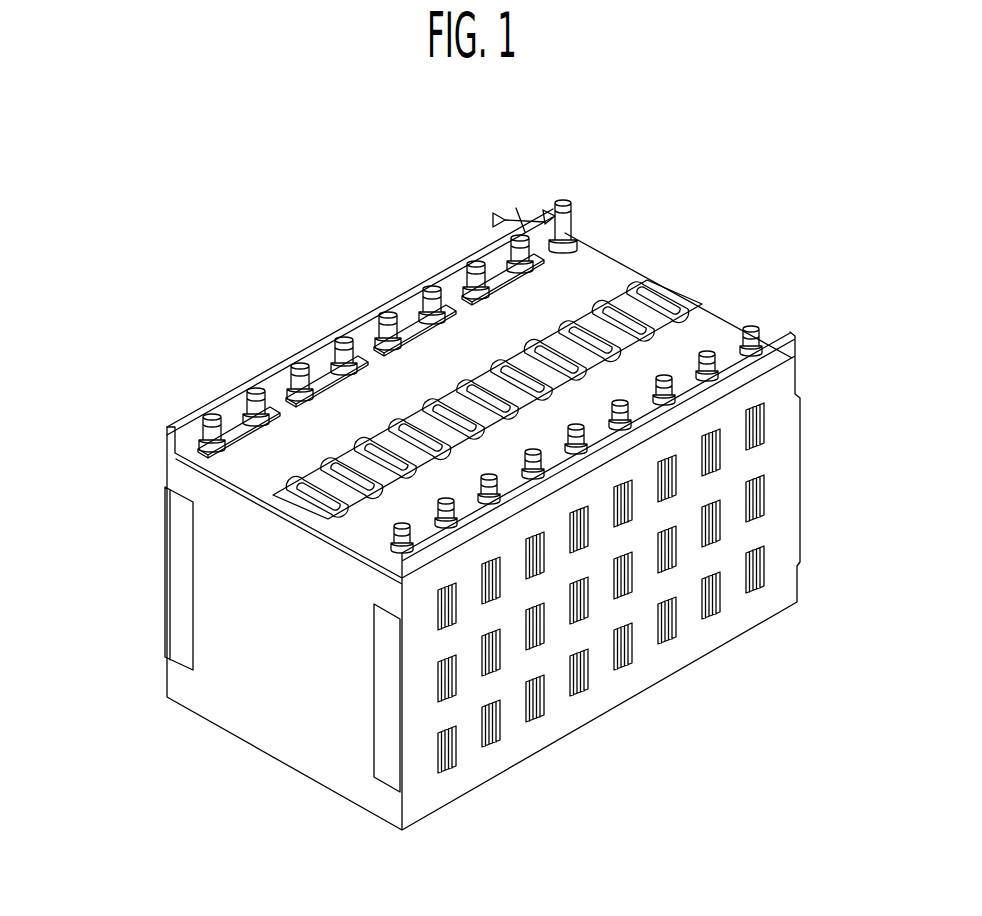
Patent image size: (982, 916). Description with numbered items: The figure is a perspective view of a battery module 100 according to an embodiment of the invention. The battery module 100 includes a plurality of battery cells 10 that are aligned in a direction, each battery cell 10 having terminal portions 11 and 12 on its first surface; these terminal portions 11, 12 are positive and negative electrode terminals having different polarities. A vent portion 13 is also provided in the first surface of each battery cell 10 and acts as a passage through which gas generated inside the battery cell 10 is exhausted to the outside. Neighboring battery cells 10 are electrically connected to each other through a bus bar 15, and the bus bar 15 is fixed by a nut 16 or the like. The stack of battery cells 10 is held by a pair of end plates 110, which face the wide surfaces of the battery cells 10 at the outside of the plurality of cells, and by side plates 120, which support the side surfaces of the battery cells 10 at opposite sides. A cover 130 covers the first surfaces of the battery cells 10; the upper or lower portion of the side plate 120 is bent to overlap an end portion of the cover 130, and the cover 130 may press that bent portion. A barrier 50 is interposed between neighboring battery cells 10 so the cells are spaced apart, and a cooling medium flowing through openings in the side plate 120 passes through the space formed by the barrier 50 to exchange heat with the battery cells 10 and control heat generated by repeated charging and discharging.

The battery module 100 is at (435, 475).
The end plates 110 is at (240, 713).
The side plate 120 is at (163, 567).
The cover 130 is at (377, 295).
The battery cell 10 is at (546, 692).
The terminal portion 11 is at (563, 203).
The terminal portion 12 is at (752, 327).
The vent portion 13 is at (653, 290).
The bus bar 15 is at (214, 417).
The nut 16 is at (234, 428).
The barrier 50 is at (544, 700).